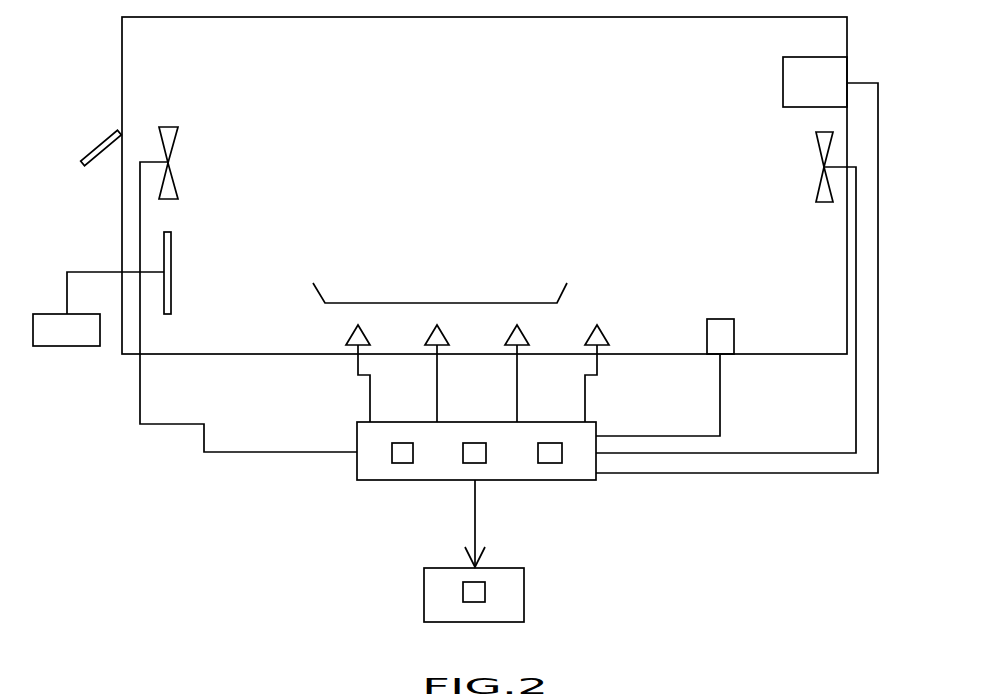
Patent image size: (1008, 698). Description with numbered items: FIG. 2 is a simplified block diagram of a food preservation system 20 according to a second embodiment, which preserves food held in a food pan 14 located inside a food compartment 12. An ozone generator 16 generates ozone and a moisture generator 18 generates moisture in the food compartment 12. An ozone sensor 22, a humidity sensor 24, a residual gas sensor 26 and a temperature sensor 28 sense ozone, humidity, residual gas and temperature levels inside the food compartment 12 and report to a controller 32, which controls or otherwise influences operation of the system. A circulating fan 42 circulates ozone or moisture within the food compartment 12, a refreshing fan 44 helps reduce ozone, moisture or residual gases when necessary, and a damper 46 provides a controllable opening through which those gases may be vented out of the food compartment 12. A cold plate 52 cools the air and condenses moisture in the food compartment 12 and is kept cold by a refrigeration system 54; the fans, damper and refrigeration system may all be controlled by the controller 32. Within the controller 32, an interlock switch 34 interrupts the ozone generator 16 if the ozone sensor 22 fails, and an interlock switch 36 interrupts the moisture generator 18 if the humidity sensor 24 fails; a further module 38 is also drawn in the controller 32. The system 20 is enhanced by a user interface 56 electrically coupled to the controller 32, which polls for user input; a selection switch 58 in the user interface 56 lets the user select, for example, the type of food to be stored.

The food compartment 12 is at (747, 17).
The food pan 14 is at (418, 303).
The ozone generator 16 is at (783, 87).
The moisture generator 18 is at (720, 318).
The system 20 is at (57, 585).
The ozone sensor 22 is at (370, 338).
The humidity sensor 24 is at (448, 338).
The residual gas sensor 26 is at (530, 338).
The temperature sensor 28 is at (611, 337).
The controller 32 is at (521, 461).
The interlock switch 34 is at (398, 463).
The interlock switch 36 is at (480, 440).
The input/output module 38 is at (545, 463).
The circulating fan 42 is at (816, 145).
The refreshing fan 44 is at (171, 127).
The damper 46 is at (100, 137).
The cold plate 52 is at (170, 283).
The refrigeration system 54 is at (70, 346).
The user interface 56 is at (488, 595).
The selection switch 58 is at (463, 590).